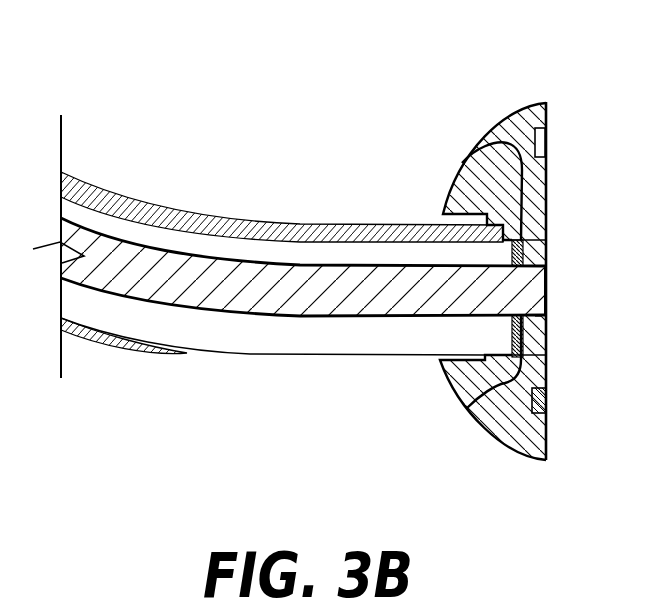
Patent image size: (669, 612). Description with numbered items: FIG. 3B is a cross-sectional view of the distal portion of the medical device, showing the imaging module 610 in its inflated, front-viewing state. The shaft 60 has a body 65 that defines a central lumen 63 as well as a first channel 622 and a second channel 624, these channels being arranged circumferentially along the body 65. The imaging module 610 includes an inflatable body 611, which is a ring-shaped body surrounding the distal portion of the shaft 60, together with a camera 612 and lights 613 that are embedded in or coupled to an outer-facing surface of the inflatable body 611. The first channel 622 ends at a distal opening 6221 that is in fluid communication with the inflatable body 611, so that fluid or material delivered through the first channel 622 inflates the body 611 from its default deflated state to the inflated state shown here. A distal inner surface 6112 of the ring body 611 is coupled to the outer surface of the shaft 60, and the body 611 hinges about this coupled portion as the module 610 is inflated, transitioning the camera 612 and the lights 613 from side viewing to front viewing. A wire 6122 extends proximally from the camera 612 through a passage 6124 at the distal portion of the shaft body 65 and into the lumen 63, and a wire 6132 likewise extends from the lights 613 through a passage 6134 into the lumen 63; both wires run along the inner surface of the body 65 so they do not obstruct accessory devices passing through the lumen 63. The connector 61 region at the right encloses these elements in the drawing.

The shaft 60 is at (231, 363).
The connector 61 is at (515, 266).
The central lumen 63 is at (540, 287).
The body 65 is at (334, 342).
The imaging module 610 is at (509, 238).
The inflatable body 611 is at (504, 416).
The camera 612 is at (547, 133).
The lights 613 is at (548, 399).
The first channel 622 is at (190, 208).
The second channel 624 is at (111, 345).
The distal inner surface 6112 is at (540, 266).
The wire 6122 is at (472, 156).
The passage 6124 is at (524, 244).
The wire 6132 is at (475, 410).
The passage 6134 is at (530, 349).
The distal opening 6221 is at (532, 232).